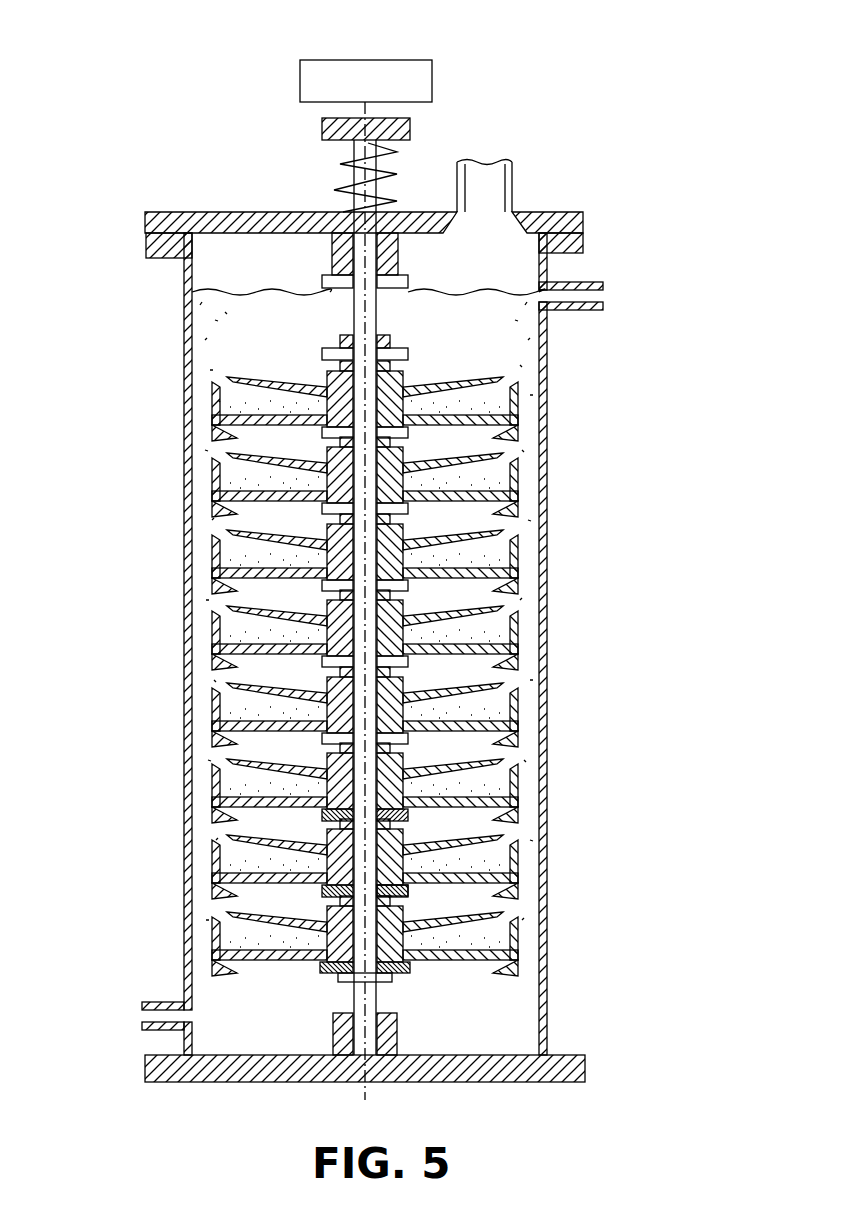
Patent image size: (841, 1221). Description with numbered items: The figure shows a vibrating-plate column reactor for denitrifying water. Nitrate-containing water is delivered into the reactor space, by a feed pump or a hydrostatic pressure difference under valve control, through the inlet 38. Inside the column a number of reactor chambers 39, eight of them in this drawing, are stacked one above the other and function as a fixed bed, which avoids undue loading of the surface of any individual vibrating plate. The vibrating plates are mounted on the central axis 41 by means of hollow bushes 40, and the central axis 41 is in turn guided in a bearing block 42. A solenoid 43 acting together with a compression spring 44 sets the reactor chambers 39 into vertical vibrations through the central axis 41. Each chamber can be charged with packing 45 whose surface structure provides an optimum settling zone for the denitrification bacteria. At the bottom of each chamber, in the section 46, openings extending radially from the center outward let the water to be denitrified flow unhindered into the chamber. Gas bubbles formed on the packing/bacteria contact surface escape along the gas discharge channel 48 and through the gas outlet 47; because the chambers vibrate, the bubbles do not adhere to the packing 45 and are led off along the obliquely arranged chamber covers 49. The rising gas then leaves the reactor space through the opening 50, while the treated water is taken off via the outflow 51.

The inlet 38 is at (163, 1002).
The reactor chamber 39 is at (516, 775).
The hollow bush 40 is at (409, 896).
The central axis 41 is at (399, 168).
The bearing block 42 is at (398, 1037).
The solenoid 43 is at (417, 60).
The compression spring 44 is at (352, 162).
The packing 45 is at (262, 962).
The section 46 is at (424, 962).
The gas outlet 47 is at (502, 530).
The gas discharge channel 48 is at (222, 964).
The chamber cover 49 is at (277, 355).
The opening 50 is at (495, 178).
The outflow 51 is at (575, 312).